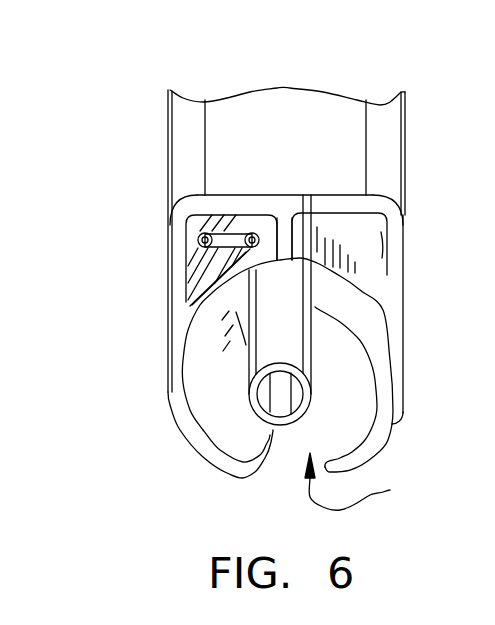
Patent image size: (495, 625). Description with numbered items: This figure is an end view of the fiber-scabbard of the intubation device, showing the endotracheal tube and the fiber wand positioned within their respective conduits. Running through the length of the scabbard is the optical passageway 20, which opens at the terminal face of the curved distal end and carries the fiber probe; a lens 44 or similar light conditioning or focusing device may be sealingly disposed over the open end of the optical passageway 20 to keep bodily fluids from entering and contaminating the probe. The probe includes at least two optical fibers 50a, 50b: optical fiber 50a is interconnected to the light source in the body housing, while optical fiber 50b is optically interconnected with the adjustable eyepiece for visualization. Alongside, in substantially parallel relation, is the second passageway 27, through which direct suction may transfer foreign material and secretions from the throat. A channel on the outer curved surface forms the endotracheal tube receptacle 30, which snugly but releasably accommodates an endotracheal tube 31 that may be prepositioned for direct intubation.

The optical passageway 20 is at (262, 208).
The lens 44 is at (231, 222).
The optical fiber 50a is at (198, 245).
The optical fiber 50b is at (185, 272).
The second passageway 27 is at (385, 262).
The endotracheal tube receptacle 30 is at (364, 481).
The endotracheal tube 31 is at (267, 457).